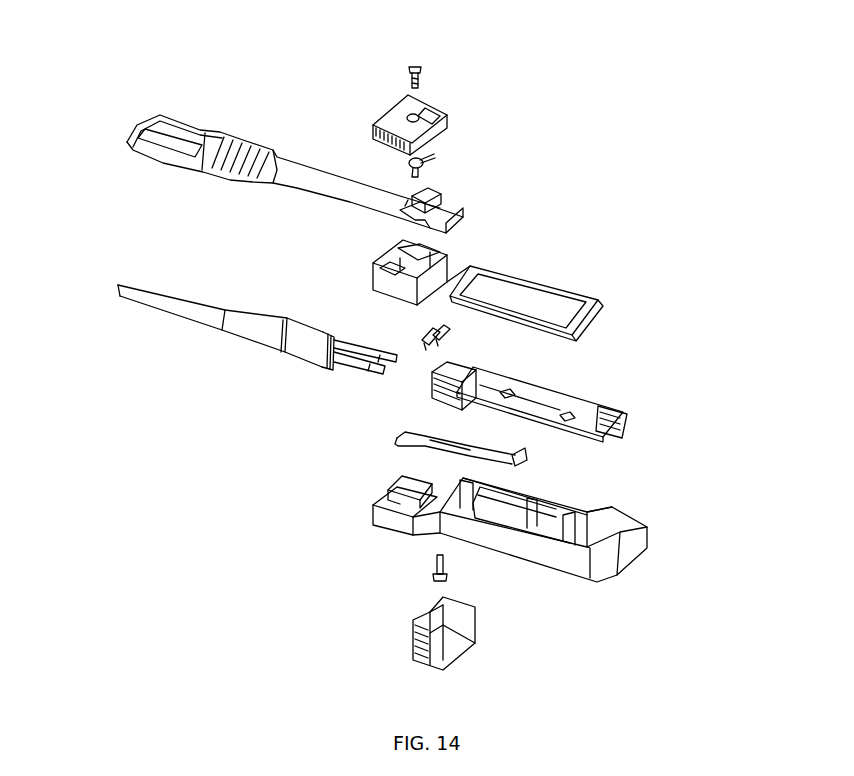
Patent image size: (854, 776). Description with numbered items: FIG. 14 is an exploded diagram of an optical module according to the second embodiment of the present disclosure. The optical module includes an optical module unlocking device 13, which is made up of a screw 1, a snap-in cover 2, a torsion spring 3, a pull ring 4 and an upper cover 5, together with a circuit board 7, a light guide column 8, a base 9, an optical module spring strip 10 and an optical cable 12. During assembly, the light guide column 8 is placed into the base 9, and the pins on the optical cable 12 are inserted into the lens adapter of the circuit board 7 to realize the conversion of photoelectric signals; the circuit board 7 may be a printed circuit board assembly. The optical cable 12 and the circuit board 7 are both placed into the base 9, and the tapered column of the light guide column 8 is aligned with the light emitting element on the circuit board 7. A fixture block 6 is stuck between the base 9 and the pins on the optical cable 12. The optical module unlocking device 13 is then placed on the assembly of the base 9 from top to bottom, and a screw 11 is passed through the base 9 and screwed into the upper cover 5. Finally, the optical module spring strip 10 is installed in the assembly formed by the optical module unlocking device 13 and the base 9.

The screw 1 is at (430, 75).
The snap-in cover 2 is at (450, 118).
The torsion spring 3 is at (427, 165).
The pull ring 4 is at (472, 217).
The upper cover 5 is at (605, 312).
The fixture block 6 is at (452, 342).
The circuit board 7 is at (627, 427).
The light guide column 8 is at (525, 457).
The base 9 is at (647, 533).
The optical module spring strip 10 is at (410, 643).
The screw 11 is at (433, 573).
The optical cable 12 is at (268, 350).
The optical module unlocking device 13 is at (720, 2).